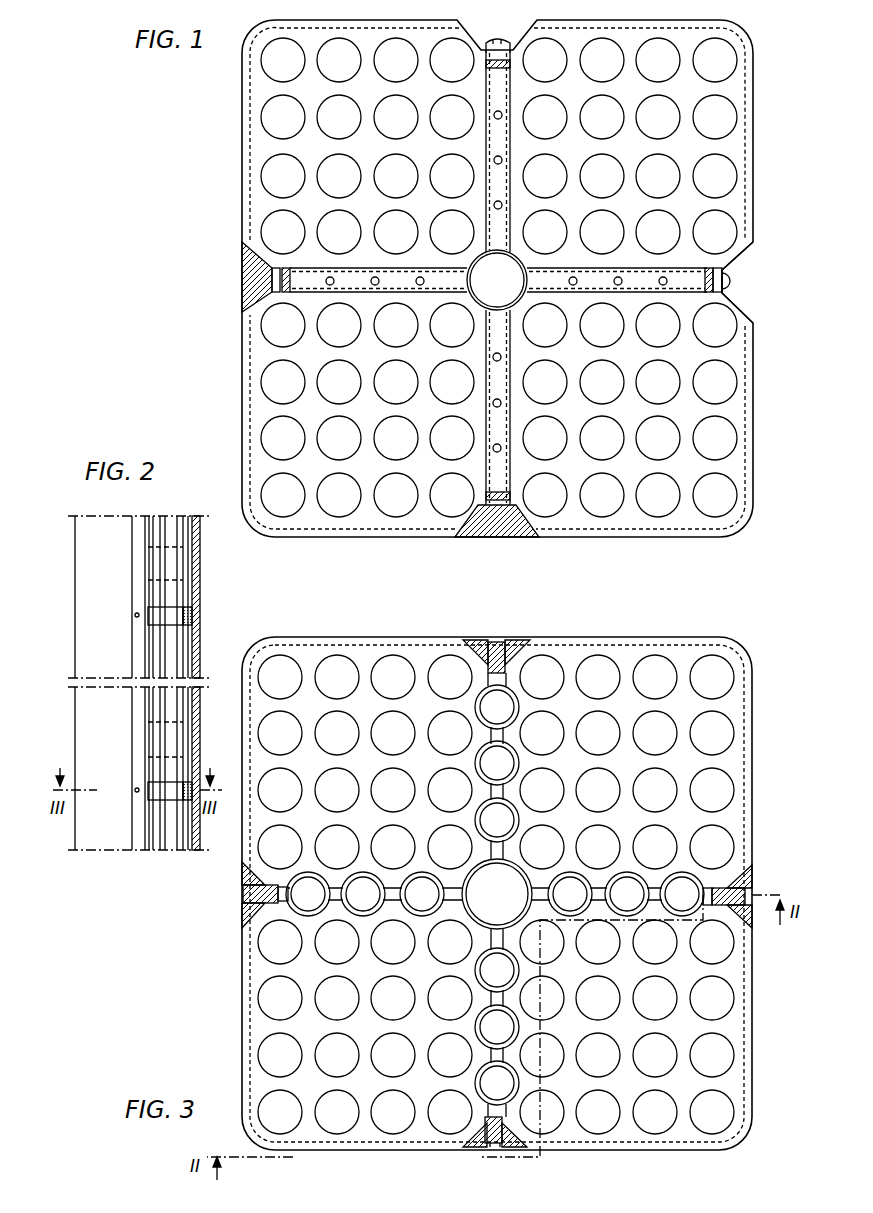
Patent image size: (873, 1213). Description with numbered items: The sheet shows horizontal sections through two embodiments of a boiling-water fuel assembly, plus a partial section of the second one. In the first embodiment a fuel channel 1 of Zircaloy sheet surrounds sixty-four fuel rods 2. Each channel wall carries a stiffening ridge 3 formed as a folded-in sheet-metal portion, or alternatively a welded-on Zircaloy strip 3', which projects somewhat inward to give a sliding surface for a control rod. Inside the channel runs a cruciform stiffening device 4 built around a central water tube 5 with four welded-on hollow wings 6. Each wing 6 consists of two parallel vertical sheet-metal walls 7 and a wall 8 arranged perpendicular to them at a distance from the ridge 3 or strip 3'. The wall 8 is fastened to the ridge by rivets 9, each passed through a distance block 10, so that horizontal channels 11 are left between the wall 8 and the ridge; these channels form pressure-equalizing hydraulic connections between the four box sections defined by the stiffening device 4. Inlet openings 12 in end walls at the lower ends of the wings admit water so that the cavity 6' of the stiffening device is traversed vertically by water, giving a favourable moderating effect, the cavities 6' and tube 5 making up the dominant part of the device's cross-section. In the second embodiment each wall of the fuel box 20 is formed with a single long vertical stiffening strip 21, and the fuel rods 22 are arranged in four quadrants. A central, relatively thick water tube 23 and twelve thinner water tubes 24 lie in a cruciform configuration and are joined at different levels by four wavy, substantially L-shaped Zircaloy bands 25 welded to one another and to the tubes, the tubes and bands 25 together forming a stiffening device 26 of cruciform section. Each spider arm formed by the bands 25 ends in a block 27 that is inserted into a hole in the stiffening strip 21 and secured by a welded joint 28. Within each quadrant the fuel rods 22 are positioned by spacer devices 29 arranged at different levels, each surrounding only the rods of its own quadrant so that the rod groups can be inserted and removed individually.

In FIG. 1, the fuel channel 1 is at (757, 140).
In FIG. 1, the fuel rods 2 is at (663, 118).
In FIG. 1, the stiffening ridge 3 is at (749, 284).
In FIG. 1, the strip 3' is at (240, 277).
In FIG. 1, the stiffening device 4 is at (513, 90).
In FIG. 1, the central water tube 5 is at (497, 280).
In FIG. 1, the hollow wings 6 is at (509, 281).
In FIG. 1, the cavity 6' is at (512, 214).
In FIG. 1, the sheet-metal walls 7 is at (683, 291).
In FIG. 1, the wall 8 is at (724, 273).
In FIG. 1, the rivets 9 is at (735, 283).
In FIG. 1, the distance block 10 is at (717, 288).
In FIG. 1, the horizontal channels 11 is at (516, 526).
In FIG. 1, the inlet openings 12 is at (373, 286).
In FIG. 2, the fuel box 20 is at (71, 828).
In FIG. 3, the fuel box 20 is at (753, 751).
In FIG. 2, the stiffening strip 21 is at (198, 563).
In FIG. 3, the stiffening strip 21 is at (513, 640).
In FIG. 3, the fuel rods 22 is at (718, 1047).
In FIG. 3, the central water tube 23 is at (497, 894).
In FIG. 3, the thinner water tubes 24 is at (358, 900).
In FIG. 2, the bands 25 is at (172, 613).
In FIG. 3, the bands 25 is at (488, 1105).
In FIG. 3, the stiffening device 26 is at (505, 735).
In FIG. 2, the block 27 is at (193, 620).
In FIG. 3, the block 27 is at (485, 638).
In FIG. 2, the welded joint 28 is at (136, 613).
In FIG. 3, the welded joint 28 is at (496, 1148).
In FIG. 2, the spacer devices 29 is at (167, 553).